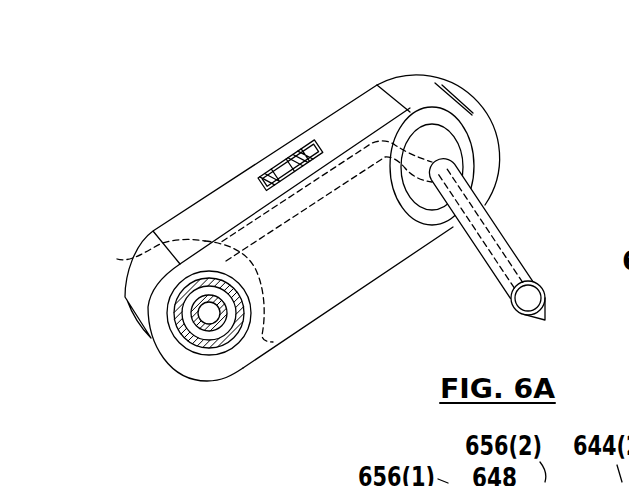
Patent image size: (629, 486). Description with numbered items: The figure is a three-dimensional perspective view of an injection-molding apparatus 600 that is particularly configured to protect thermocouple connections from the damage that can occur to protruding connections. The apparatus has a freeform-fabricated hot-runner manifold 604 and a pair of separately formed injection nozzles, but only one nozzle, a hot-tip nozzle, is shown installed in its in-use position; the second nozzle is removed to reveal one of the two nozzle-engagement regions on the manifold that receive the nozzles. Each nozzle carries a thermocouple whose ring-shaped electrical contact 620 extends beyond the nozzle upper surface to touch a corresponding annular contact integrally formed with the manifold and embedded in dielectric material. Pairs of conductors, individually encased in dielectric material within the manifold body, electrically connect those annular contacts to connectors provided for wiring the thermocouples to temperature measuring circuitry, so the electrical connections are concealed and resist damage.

The injection-molding apparatus 600 is at (494, 115).
The hot-runner manifold 604 is at (180, 205).
The ring-shaped electrical contact 620 is at (549, 320).